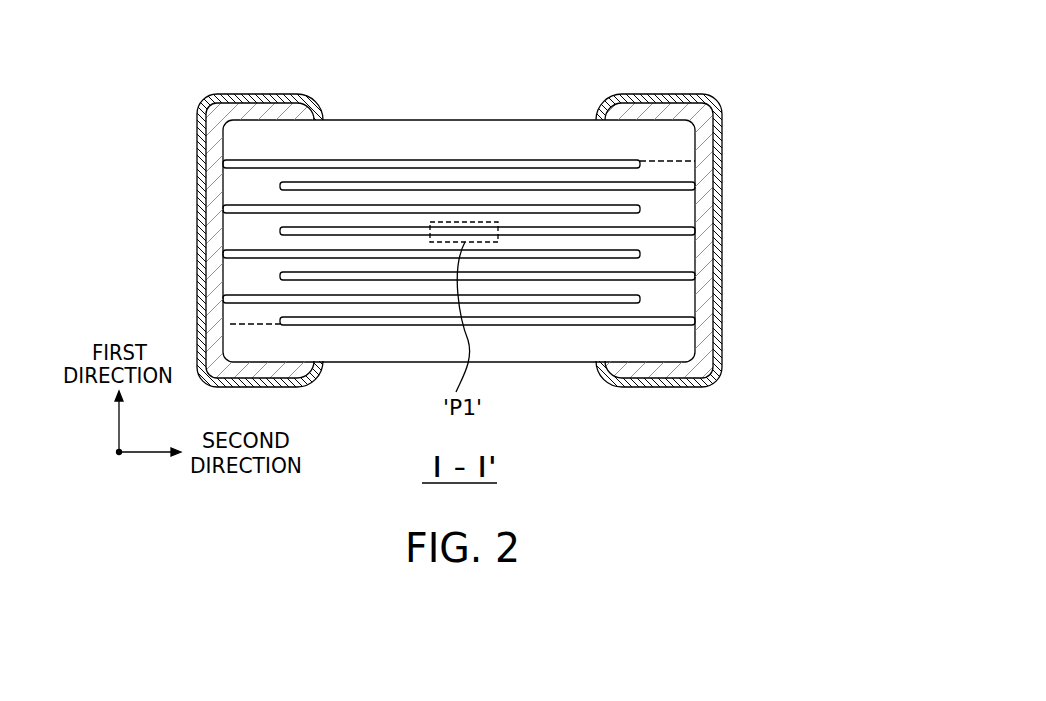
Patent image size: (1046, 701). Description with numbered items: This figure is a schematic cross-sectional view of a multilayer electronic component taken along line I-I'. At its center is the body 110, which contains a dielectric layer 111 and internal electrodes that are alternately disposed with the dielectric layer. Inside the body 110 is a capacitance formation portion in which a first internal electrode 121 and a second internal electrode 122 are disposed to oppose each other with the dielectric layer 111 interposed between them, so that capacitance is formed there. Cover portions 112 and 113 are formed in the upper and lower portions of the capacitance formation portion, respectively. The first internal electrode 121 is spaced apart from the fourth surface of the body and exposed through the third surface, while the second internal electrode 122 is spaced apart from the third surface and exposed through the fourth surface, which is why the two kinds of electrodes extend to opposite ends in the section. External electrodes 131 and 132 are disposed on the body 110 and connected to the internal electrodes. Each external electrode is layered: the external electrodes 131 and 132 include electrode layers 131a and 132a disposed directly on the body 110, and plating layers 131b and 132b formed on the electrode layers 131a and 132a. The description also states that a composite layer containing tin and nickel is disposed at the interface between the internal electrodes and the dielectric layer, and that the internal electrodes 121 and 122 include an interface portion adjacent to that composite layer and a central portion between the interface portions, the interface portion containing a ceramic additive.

The body 110 is at (393, 120).
The dielectric layer 111 is at (340, 194).
The cover portion 112 is at (461, 133).
The cover portion 113 is at (375, 345).
The first internal electrode 121 is at (529, 162).
The second internal electrode 122 is at (583, 184).
The external electrode 131 is at (184, 240).
The electrode layer 131a is at (213, 172).
The plating layer 131b is at (201, 198).
The external electrode 132 is at (736, 240).
The electrode layer 132a is at (705, 148).
The plating layer 132b is at (715, 175).